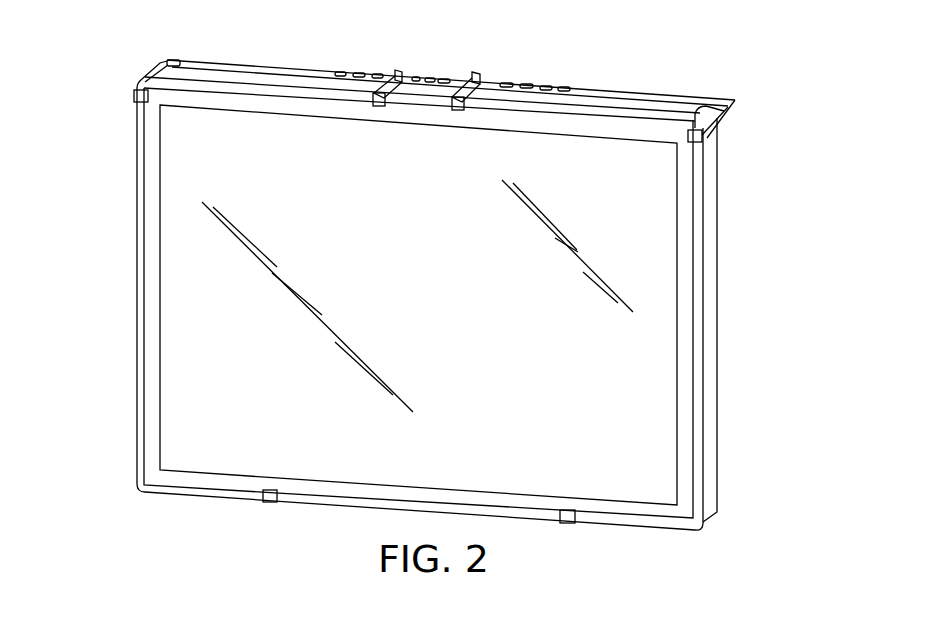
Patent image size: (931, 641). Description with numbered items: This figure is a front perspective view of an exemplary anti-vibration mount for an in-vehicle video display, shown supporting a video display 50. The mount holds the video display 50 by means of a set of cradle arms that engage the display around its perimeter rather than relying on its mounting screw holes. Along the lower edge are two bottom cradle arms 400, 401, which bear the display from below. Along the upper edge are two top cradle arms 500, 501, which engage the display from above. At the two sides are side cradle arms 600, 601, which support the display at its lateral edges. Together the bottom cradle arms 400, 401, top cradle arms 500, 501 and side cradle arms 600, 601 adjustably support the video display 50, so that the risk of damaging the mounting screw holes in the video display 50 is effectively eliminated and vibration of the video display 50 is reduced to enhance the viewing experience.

The video display 50 is at (463, 322).
The bottom cradle arm 400 is at (563, 523).
The bottom cradle arm 401 is at (268, 507).
The top cradle arm 500 is at (500, 70).
The top cradle arm 501 is at (385, 67).
The side cradle arm 600 is at (755, 105).
The side cradle arm 601 is at (122, 73).